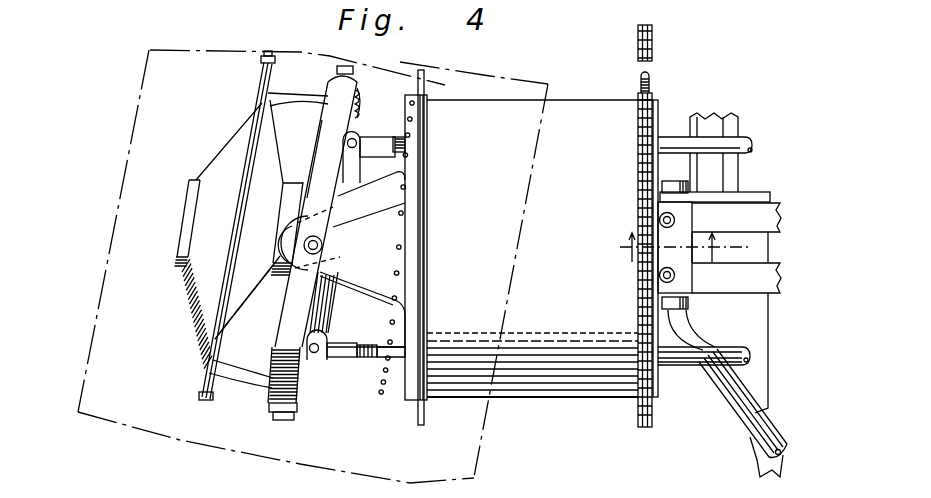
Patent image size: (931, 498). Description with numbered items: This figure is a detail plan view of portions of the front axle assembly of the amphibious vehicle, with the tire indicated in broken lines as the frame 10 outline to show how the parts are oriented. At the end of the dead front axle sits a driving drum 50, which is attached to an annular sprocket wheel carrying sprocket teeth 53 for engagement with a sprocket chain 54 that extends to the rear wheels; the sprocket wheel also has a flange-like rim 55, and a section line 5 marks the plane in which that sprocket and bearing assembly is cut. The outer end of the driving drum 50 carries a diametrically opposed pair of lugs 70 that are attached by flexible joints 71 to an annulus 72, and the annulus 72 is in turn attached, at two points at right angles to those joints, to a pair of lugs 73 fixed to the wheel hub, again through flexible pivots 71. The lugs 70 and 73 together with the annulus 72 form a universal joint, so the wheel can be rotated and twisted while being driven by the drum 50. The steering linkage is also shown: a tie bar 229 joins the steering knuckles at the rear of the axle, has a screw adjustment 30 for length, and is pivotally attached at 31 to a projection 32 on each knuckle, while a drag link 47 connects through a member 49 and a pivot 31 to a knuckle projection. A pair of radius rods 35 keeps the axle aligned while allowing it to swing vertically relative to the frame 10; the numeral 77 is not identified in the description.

The section line 5 is at (698, 297).
The frame 10 is at (478, 462).
The screw adjustment 30 is at (403, 137).
The pivot 31 is at (346, 144).
The projection 32 is at (357, 177).
The radius rods 35 is at (723, 392).
The drag link 47 is at (730, 348).
The member 49 is at (370, 347).
The driving drum 50 is at (330, 303).
The sprocket teeth 53 is at (650, 80).
The sprocket chain 54 is at (653, 32).
The flange-like rim 55 is at (658, 105).
The lugs 70 is at (357, 192).
The flexible joints 71 is at (364, 99).
The annulus 72 is at (307, 378).
The lugs 73 is at (280, 90).
The pedal plate 77 is at (247, 137).
The tie bar 229 is at (738, 152).